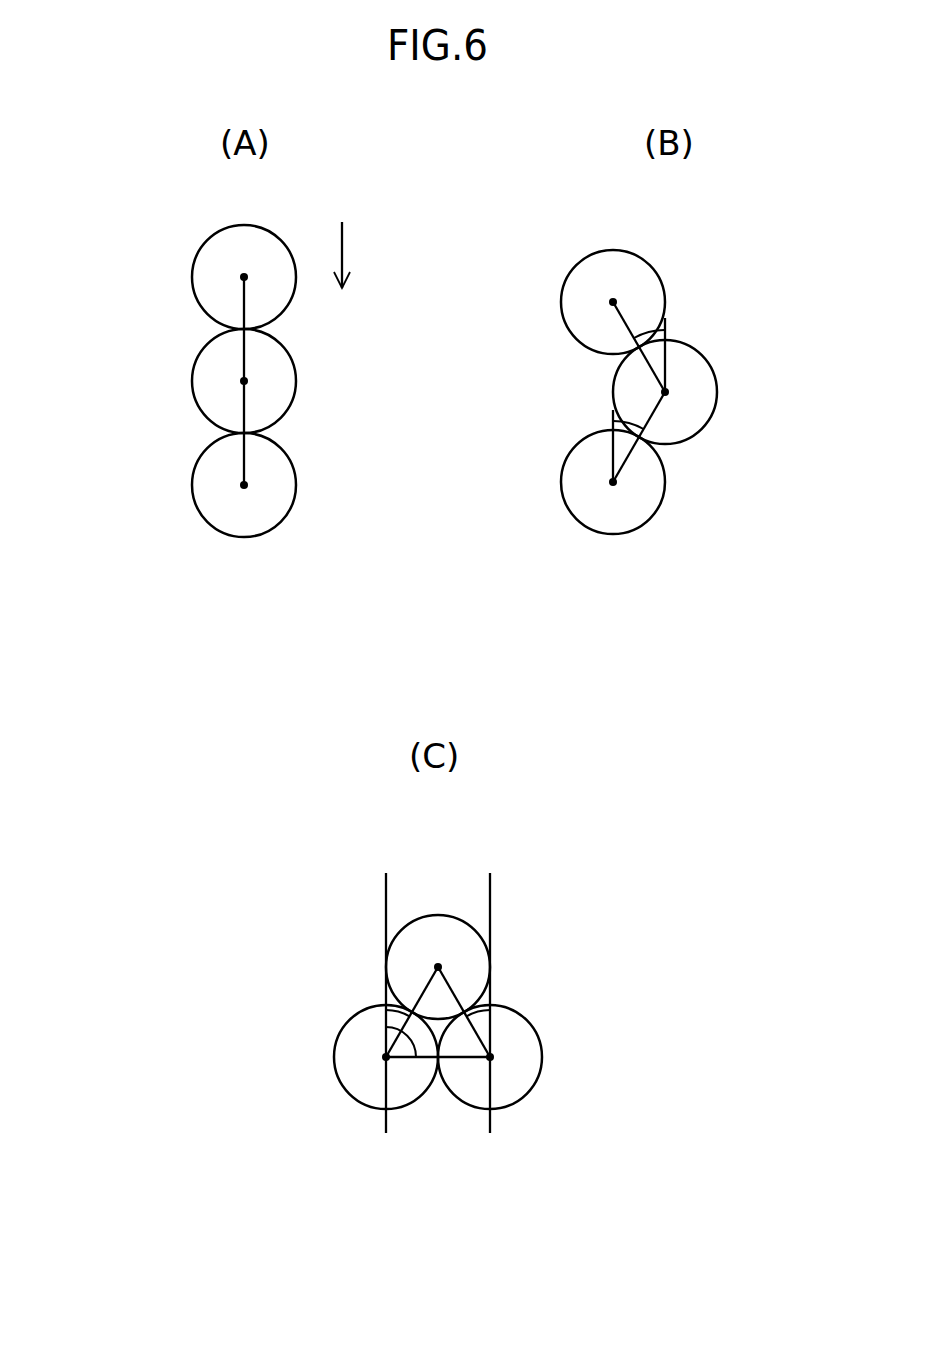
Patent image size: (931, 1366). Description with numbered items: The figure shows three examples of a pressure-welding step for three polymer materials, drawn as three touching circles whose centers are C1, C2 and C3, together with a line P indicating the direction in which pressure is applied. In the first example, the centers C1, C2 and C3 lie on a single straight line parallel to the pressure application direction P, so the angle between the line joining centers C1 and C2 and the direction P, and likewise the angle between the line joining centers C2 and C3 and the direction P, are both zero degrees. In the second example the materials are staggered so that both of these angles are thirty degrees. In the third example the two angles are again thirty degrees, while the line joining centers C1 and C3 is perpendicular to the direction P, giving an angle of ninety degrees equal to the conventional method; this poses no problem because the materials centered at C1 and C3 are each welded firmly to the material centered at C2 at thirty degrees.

The center of first polymer material C1 is at (244, 485).
The center of second polymer material C2 is at (244, 381).
The center of third polymer material C3 is at (244, 277).
The pressure application direction P is at (415, 658).